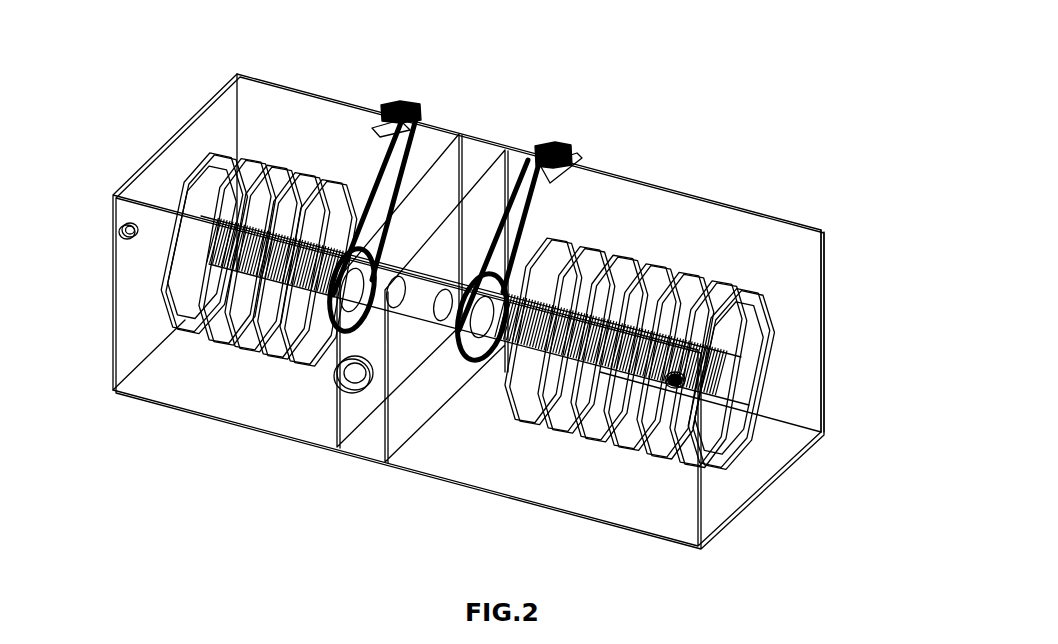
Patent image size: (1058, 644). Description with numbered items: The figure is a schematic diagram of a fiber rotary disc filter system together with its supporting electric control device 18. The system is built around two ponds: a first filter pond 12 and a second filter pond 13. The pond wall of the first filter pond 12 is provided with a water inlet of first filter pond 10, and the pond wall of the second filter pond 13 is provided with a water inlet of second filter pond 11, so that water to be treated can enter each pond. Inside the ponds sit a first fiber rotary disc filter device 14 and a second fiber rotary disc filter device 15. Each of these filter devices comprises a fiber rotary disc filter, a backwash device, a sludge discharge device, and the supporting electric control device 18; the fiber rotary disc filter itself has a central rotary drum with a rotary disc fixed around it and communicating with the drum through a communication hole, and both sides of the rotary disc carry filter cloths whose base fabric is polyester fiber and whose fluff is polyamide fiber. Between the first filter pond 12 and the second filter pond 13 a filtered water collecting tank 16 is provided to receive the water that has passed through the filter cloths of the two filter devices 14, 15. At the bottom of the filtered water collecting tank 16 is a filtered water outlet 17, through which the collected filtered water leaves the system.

The water inlet of first filter pond 10 is at (117, 220).
The water inlet of second filter pond 11 is at (675, 378).
The first filter pond 12 is at (290, 120).
The second filter pond 13 is at (688, 217).
The first fiber rotary disc filter device 14 is at (275, 178).
The second fiber rotary disc filter device 15 is at (578, 260).
The filtered water collecting tank 16 is at (472, 155).
The filtered water outlet 17 is at (337, 387).
The supporting electric control device 18 is at (560, 147).